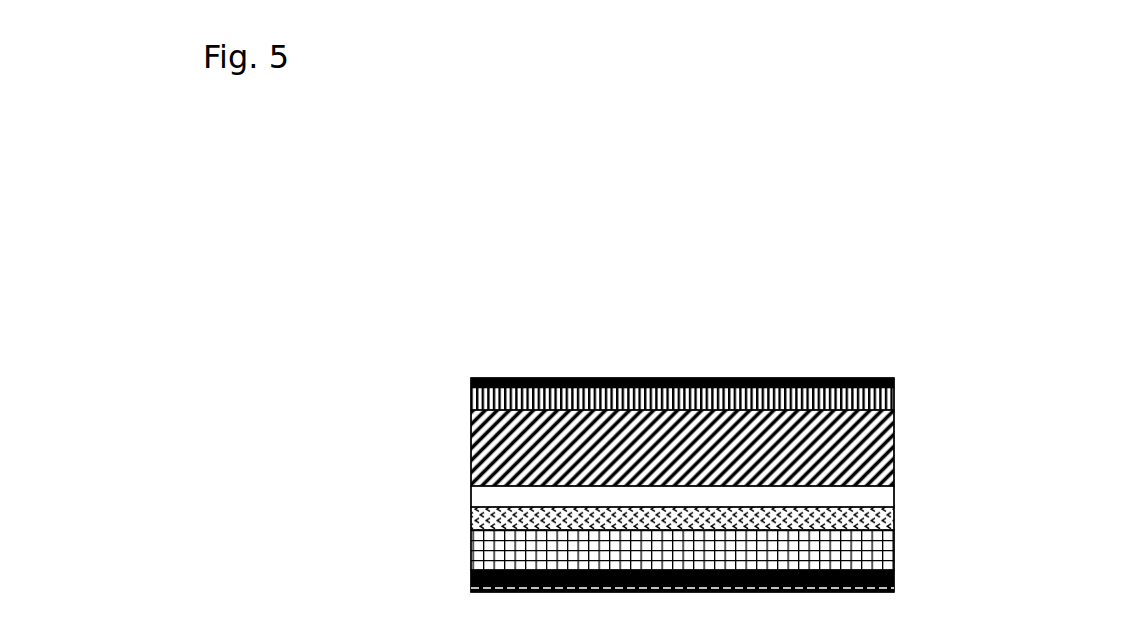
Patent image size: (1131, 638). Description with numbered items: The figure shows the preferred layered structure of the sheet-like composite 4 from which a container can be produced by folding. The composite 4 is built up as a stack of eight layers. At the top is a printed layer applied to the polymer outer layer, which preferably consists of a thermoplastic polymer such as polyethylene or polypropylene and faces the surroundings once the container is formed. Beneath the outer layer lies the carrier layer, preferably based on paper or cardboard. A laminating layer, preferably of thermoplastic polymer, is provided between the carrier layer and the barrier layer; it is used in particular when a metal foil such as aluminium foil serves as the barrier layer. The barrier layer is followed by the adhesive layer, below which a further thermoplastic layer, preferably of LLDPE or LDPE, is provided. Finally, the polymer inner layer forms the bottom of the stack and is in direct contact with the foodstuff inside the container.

The sheet-like composite 4 is at (601, 391).